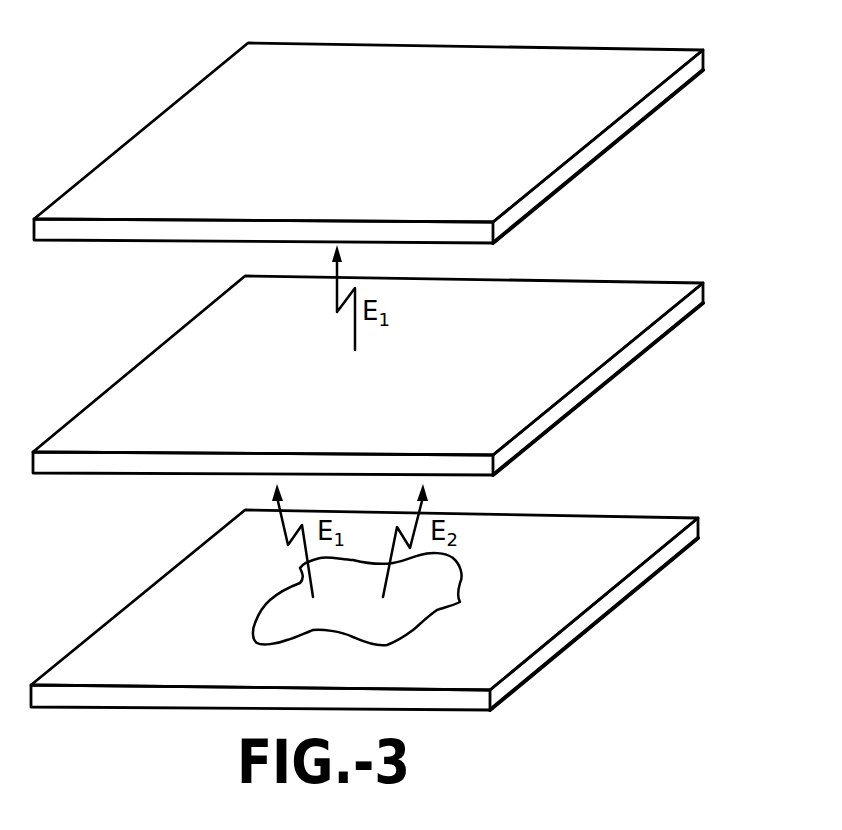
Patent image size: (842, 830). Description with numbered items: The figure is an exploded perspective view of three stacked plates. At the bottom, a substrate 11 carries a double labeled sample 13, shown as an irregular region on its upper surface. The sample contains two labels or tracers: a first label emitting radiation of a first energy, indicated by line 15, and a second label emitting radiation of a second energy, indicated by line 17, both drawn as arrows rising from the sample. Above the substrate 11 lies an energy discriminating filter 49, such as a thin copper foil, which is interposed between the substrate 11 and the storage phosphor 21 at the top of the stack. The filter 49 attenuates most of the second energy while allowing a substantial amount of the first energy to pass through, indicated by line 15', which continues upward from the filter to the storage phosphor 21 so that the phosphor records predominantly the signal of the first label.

The substrate 11 is at (603, 527).
The double labeled sample 13 is at (425, 603).
The line indicating radiation of energy E1 15 is at (270, 540).
The line indicating passed energy E1 15' is at (317, 297).
The line indicating radiation of energy E2 17 is at (390, 560).
The storage phosphor 21 is at (607, 60).
The energy discriminating filter 49 is at (600, 293).